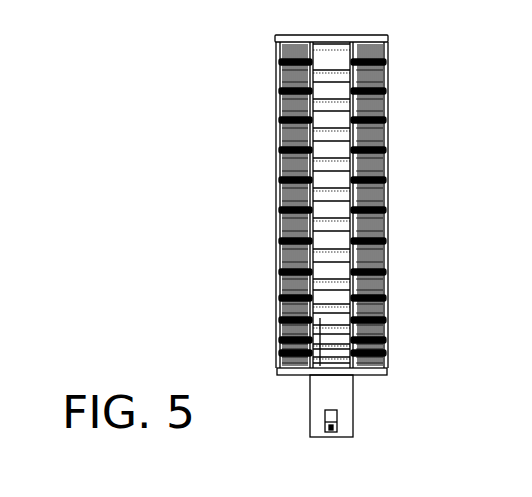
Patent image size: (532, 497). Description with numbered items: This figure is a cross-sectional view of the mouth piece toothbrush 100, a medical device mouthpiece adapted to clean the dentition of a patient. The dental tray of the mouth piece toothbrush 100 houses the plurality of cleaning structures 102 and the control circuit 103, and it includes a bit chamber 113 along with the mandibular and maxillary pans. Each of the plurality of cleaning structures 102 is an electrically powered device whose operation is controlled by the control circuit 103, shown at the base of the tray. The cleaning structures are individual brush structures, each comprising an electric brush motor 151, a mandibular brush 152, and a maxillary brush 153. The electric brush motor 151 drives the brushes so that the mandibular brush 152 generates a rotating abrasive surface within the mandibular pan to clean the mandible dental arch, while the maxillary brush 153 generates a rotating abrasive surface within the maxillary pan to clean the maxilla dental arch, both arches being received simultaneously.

The mouth piece toothbrush 100 is at (274, 256).
The electric brush motor 151 is at (333, 182).
The mandibular brush 152 is at (292, 183).
The maxillary brush 153 is at (377, 190).
The plurality of cleaning structures 102 is at (373, 332).
The control circuit 103 is at (338, 393).
The bit chamber 113 is at (328, 318).